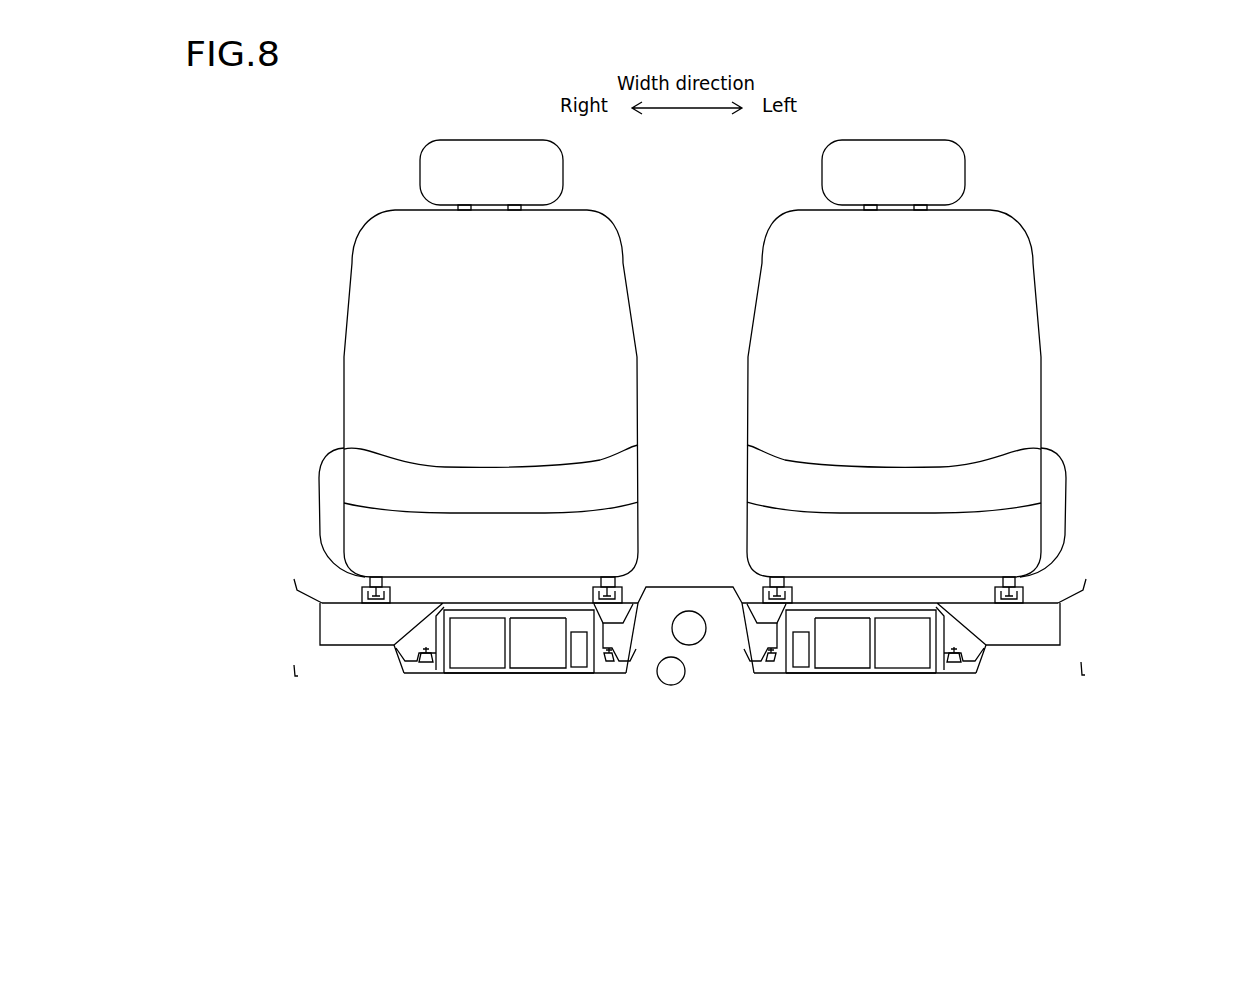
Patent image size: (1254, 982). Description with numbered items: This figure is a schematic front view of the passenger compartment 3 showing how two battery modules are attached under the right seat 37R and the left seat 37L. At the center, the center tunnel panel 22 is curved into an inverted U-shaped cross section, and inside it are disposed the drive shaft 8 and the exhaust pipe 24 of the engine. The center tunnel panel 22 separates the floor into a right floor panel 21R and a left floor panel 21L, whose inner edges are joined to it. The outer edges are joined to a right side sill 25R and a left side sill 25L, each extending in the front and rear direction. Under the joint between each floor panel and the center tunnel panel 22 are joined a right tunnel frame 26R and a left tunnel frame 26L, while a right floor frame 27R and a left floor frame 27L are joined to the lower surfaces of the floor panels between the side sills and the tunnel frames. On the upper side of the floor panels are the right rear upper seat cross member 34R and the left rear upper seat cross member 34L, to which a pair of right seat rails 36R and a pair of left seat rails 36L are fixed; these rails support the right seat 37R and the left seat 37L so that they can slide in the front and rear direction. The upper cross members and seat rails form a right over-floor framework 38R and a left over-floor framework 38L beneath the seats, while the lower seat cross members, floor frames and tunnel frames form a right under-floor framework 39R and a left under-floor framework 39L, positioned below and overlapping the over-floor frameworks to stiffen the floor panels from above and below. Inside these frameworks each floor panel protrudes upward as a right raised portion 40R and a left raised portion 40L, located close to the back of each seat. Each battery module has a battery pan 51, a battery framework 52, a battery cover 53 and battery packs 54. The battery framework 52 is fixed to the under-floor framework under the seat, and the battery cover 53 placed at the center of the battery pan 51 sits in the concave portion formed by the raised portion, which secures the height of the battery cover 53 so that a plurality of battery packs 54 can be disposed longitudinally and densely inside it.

The passenger compartment 3 is at (700, 206).
The drive shaft 8 is at (692, 611).
The center tunnel panel 22 is at (717, 587).
The exhaust pipe 24 is at (670, 657).
The right floor panel 21R is at (338, 648).
The left floor panel 21L is at (1037, 647).
The right side sill 25R is at (294, 668).
The left side sill 25L is at (1082, 662).
The right tunnel frame 26R is at (633, 660).
The left tunnel frame 26L is at (747, 660).
The right floor frame 27R is at (393, 672).
The left floor frame 27L is at (983, 655).
The right rear upper seat cross member 34R is at (337, 622).
The left rear upper seat cross member 34L is at (1033, 628).
The right seat rails 36R is at (362, 592).
The left seat rails 36L is at (1022, 588).
The right seat 37R is at (346, 358).
The left seat 37L is at (1040, 372).
The right over-floor framework 38R is at (338, 594).
The left over-floor framework 38L is at (1042, 591).
The right under-floor framework 39R is at (382, 671).
The left under-floor framework 39L is at (997, 667).
The right raised portion 40R is at (493, 620).
The left raised portion 40L is at (917, 622).
The battery pan 51 is at (472, 675).
The battery framework 52 is at (420, 675).
The battery cover 53 is at (556, 619).
The battery pack 54 is at (533, 660).